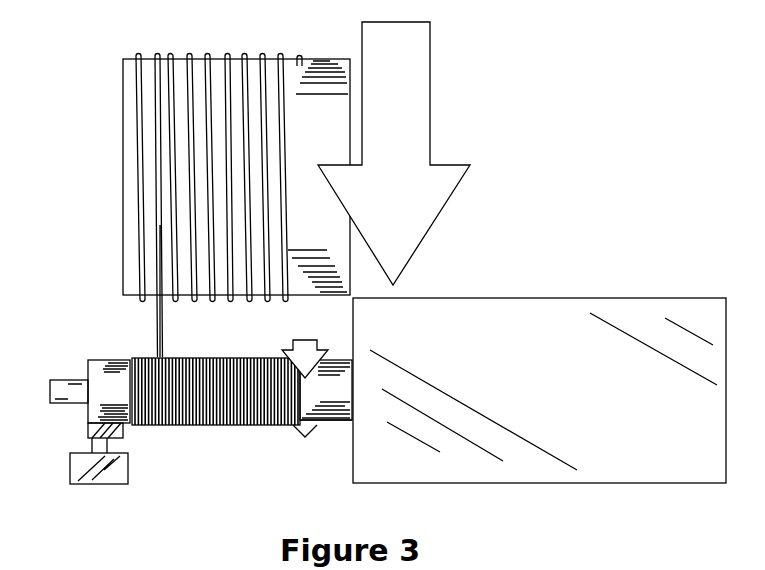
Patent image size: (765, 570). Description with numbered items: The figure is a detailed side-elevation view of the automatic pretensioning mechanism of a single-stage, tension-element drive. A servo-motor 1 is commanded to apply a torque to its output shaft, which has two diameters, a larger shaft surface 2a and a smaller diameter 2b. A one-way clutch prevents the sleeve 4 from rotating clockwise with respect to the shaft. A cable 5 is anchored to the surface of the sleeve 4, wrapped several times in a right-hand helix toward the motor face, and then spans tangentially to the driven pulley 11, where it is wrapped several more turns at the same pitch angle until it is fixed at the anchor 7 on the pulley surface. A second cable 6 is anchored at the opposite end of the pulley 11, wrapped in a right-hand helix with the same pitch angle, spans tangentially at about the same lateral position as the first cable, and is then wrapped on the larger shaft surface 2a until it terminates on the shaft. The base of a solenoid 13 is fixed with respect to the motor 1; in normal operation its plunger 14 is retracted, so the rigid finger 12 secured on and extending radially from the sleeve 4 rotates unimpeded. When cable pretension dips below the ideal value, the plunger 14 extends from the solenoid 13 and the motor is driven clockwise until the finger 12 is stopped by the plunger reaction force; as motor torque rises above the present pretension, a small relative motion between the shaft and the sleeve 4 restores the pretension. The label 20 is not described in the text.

The servo-motor 1 is at (493, 332).
The larger shaft surface 2a is at (62, 352).
The shaft diameter 2b is at (343, 422).
The sleeve 4 is at (87, 359).
The cable 5 is at (171, 54).
The second cable 6 is at (152, 54).
The anchor 7 is at (302, 60).
The driven pulley 11 is at (122, 137).
The rigid finger 12 is at (87, 432).
The solenoid 13 is at (69, 467).
The plunger 14 is at (89, 447).
The flow arrow 20 is at (299, 408).